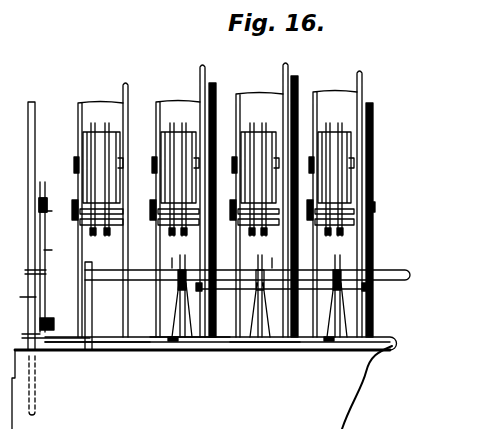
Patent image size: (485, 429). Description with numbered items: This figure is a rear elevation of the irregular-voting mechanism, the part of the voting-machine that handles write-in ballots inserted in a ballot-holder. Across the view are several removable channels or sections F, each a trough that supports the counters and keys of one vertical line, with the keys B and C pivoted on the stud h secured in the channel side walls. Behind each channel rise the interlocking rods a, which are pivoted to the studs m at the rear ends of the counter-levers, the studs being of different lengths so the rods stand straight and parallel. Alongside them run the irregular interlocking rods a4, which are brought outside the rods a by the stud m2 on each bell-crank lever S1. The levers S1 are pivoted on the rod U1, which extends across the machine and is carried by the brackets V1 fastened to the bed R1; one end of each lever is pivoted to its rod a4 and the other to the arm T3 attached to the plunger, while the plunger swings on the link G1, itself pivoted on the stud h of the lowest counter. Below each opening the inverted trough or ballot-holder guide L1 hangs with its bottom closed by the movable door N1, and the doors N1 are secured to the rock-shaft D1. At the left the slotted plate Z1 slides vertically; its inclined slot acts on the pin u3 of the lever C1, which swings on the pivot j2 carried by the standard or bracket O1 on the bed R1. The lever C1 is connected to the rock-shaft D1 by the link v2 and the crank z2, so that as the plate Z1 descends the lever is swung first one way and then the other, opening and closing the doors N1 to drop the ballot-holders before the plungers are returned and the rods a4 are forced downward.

The slotted plate Z1 is at (28, 175).
The pivot j2 is at (42, 253).
The pin u3 is at (26, 271).
The standard O1 is at (18, 298).
The bracket V1 is at (86, 300).
The link v2 is at (24, 330).
The crank z2 is at (57, 327).
The lever C1 is at (58, 248).
The channel F is at (77, 116).
The interlocking rod a is at (357, 76).
The irregular interlocking rod a4 is at (218, 80).
The key B is at (154, 163).
The key C is at (82, 166).
The stud h is at (72, 210).
The stud m is at (101, 229).
The rod U1 is at (148, 269).
The link G1 is at (221, 252).
The bell-crank lever S1 is at (186, 265).
The ballot-holder guide L1 is at (172, 322).
The stud m2 is at (199, 292).
The rock-shaft D1 is at (140, 345).
The door N1 is at (174, 346).
The arm T3 is at (191, 341).
The bed R1 is at (238, 341).